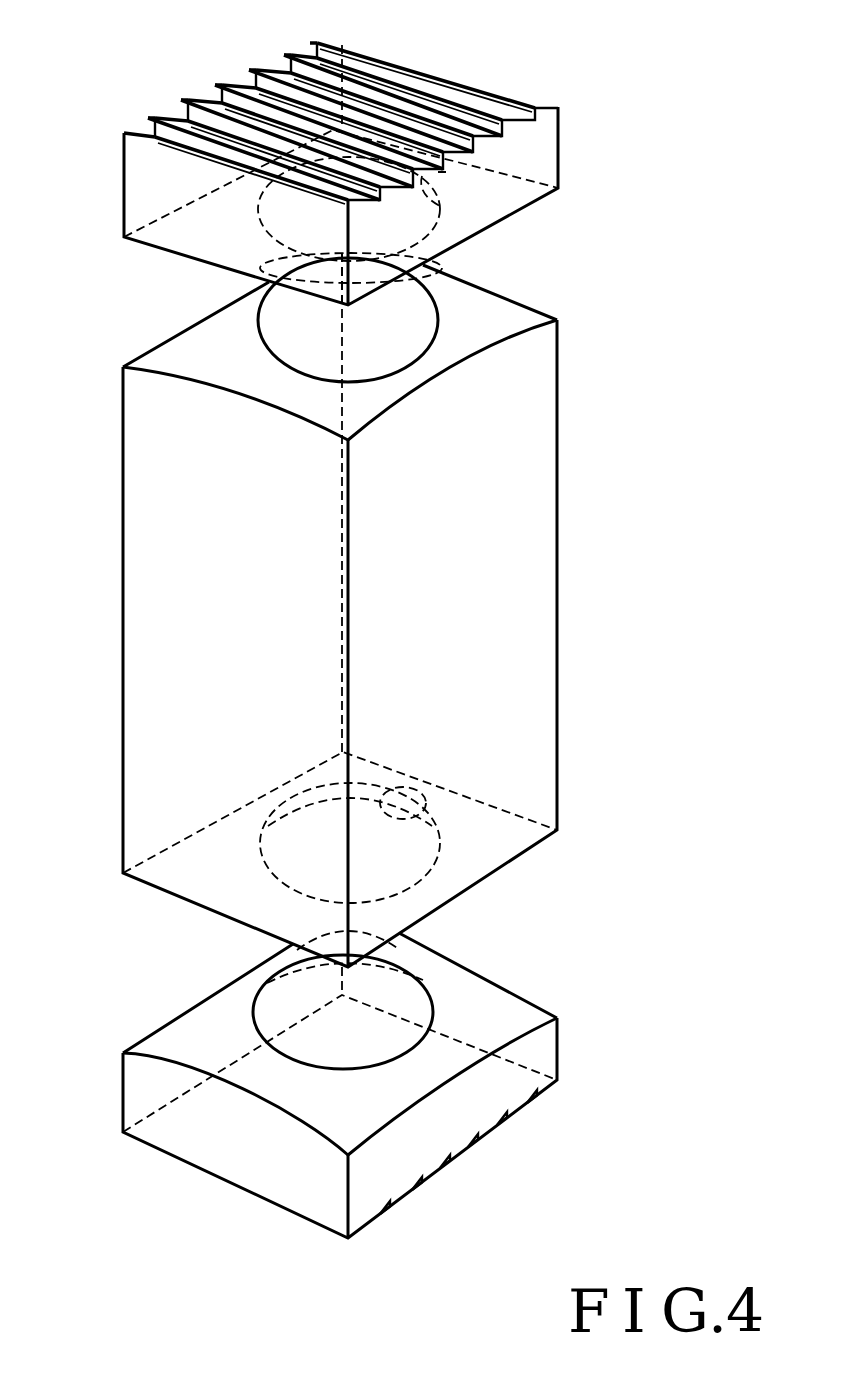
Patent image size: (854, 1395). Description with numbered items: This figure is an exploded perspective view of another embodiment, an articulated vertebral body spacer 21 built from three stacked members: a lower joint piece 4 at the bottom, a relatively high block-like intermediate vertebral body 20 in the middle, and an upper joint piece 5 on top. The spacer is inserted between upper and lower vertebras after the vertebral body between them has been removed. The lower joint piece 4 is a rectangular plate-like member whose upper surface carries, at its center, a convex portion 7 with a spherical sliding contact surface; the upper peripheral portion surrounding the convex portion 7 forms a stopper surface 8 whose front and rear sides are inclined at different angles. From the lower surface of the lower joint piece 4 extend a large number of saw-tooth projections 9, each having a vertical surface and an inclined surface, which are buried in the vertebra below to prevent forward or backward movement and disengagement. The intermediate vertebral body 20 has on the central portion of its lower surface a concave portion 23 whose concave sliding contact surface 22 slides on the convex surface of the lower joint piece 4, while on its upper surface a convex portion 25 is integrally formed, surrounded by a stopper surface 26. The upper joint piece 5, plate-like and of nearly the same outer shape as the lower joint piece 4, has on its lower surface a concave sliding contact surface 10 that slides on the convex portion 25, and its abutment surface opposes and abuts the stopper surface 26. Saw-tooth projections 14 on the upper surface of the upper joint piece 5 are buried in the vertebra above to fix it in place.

The lower joint piece 4 is at (378, 1068).
The upper joint piece 5 is at (391, 153).
The convex portion 7 is at (403, 960).
The stopper surface 8 is at (478, 983).
The saw-tooth projections 9 is at (490, 1137).
The concave sliding contact surface 10 is at (450, 203).
The saw-tooth projections 14 is at (412, 88).
The intermediate vertebral body 20 is at (399, 605).
The articulated vertebral body spacer 21 is at (675, 459).
The concave sliding contact surface 22 is at (265, 880).
The concave portion 23 is at (465, 793).
The convex portion 25 is at (425, 290).
The stopper surface 26 is at (480, 313).